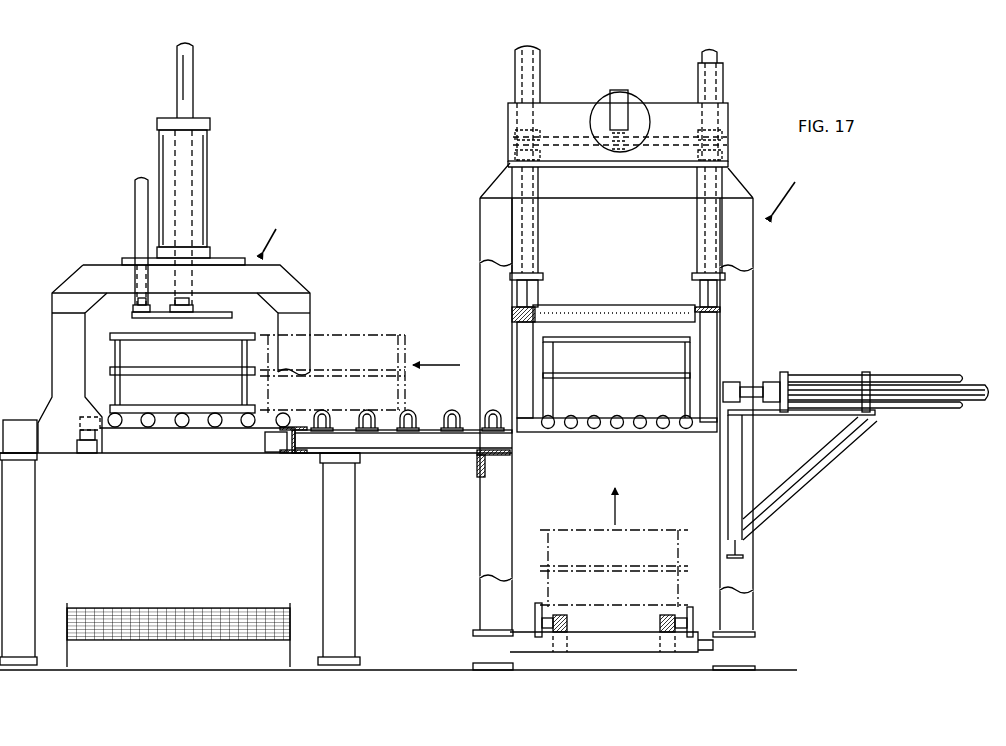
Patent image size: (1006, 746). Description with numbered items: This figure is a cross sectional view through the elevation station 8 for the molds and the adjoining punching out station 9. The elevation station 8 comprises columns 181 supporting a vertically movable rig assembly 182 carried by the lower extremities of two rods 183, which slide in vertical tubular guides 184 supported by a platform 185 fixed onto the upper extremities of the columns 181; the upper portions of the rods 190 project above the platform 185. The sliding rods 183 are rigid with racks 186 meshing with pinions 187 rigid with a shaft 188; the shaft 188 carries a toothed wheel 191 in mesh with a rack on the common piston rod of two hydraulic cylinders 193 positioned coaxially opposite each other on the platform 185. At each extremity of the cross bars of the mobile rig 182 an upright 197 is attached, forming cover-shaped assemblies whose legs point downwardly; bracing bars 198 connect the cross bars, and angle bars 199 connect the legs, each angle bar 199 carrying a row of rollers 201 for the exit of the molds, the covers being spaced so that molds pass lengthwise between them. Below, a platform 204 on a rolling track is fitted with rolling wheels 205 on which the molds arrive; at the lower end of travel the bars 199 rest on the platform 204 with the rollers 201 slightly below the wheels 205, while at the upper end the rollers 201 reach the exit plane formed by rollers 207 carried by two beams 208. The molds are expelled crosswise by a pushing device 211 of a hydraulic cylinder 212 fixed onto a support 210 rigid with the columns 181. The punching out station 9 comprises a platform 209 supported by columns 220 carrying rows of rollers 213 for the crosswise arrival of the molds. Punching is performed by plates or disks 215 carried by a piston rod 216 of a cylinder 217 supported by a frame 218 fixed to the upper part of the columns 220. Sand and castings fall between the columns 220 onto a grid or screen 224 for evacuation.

The elevation station 8 is at (790, 197).
The punching out station 9 is at (275, 234).
The columns 181 is at (480, 320).
The rig assembly 182 is at (592, 303).
The rods 183 is at (538, 295).
The tubular guides 184 is at (538, 228).
The platform 185 is at (650, 190).
The racks 186 is at (528, 118).
The pinions 187 is at (728, 146).
The shaft 188 is at (568, 136).
The tie rod 190 is at (540, 88).
The toothed wheel 191 is at (639, 122).
The hydraulic cylinders 193 is at (637, 112).
The upright 197 is at (527, 335).
The bracing bars 198 is at (650, 303).
The angle bars 199 is at (650, 432).
The rollers 201 is at (570, 432).
The platform 204 is at (642, 628).
The rolling wheels 205 is at (543, 605).
The rollers 207 is at (441, 412).
The beams 208 is at (418, 448).
The platform 209 is at (125, 445).
The support 210 is at (802, 415).
The pushing device 211 is at (738, 383).
The hydraulic cylinder 212 is at (910, 378).
The rollers 213 is at (217, 427).
The plates or disks 215 is at (232, 315).
The piston rod 216 is at (190, 300).
The cylinder 217 is at (199, 173).
The frame 218 is at (290, 291).
The columns 220 is at (23, 557).
The grid or screen 224 is at (186, 613).